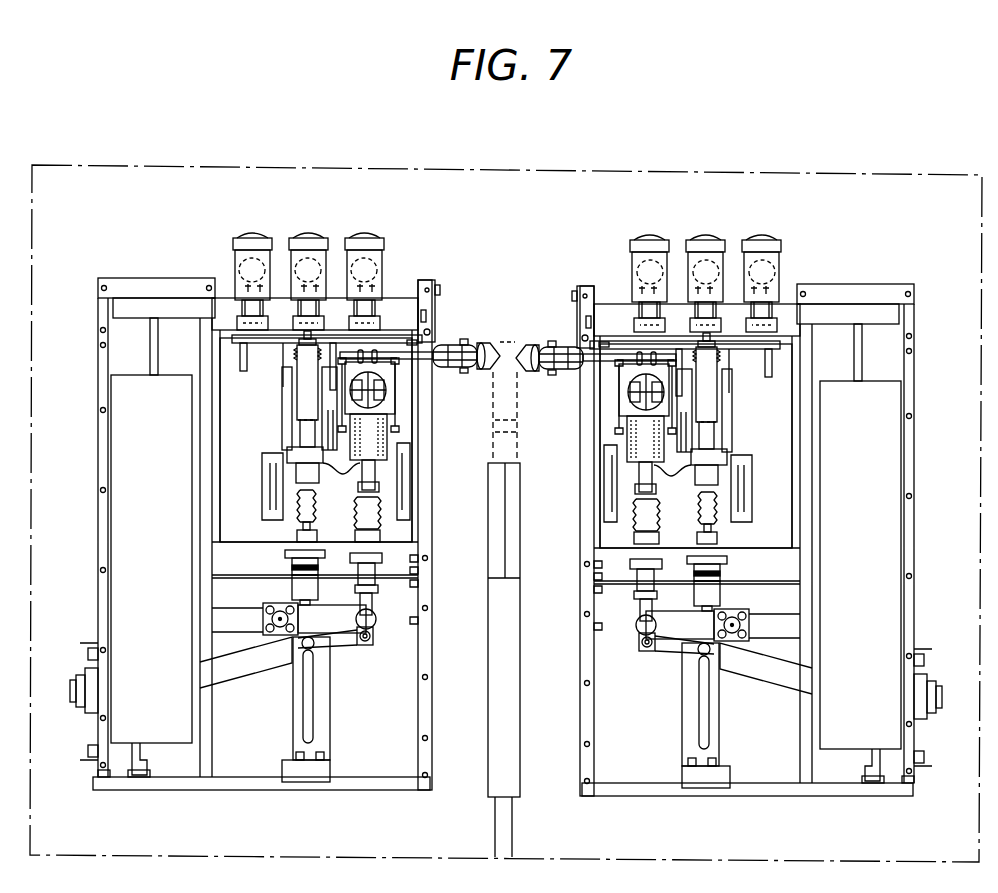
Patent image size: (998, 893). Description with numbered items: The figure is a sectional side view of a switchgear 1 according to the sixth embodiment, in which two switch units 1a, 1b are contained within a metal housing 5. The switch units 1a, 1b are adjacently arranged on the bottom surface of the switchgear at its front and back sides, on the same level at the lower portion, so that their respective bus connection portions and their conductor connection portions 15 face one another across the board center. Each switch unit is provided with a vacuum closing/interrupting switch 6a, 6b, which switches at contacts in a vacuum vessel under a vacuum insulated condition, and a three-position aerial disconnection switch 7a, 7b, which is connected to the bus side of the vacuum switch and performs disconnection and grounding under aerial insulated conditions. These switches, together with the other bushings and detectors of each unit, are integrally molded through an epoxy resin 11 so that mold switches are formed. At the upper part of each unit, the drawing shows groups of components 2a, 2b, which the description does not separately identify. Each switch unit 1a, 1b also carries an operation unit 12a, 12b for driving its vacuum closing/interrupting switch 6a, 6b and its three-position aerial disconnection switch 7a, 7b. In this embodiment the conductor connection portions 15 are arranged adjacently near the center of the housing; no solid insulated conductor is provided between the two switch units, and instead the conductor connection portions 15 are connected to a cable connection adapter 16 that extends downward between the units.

The switchgear 1 is at (322, 167).
The metal housing 5 is at (808, 175).
The switch unit 1a is at (154, 278).
The switch unit 1b is at (856, 284).
The first set of material tanks 2a is at (385, 225).
The second set of material tanks 2b is at (782, 225).
The three-position aerial disconnection switch 7a is at (298, 352).
The three-position aerial disconnection switch 7b is at (718, 354).
The vacuum closing/interrupting switch 6a is at (395, 440).
The vacuum closing/interrupting switch 6b is at (605, 440).
The epoxy resin 11 is at (272, 412).
The operation unit 12a is at (125, 494).
The operation unit 12b is at (880, 494).
The conductor connection portion 15 is at (555, 346).
The cable connection adapter 16 is at (488, 778).